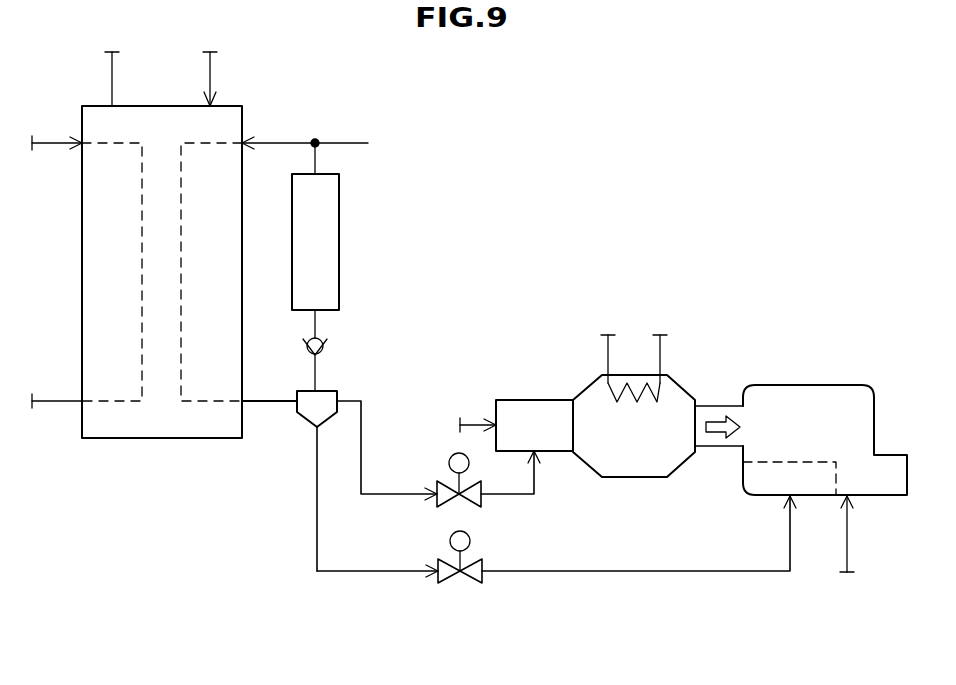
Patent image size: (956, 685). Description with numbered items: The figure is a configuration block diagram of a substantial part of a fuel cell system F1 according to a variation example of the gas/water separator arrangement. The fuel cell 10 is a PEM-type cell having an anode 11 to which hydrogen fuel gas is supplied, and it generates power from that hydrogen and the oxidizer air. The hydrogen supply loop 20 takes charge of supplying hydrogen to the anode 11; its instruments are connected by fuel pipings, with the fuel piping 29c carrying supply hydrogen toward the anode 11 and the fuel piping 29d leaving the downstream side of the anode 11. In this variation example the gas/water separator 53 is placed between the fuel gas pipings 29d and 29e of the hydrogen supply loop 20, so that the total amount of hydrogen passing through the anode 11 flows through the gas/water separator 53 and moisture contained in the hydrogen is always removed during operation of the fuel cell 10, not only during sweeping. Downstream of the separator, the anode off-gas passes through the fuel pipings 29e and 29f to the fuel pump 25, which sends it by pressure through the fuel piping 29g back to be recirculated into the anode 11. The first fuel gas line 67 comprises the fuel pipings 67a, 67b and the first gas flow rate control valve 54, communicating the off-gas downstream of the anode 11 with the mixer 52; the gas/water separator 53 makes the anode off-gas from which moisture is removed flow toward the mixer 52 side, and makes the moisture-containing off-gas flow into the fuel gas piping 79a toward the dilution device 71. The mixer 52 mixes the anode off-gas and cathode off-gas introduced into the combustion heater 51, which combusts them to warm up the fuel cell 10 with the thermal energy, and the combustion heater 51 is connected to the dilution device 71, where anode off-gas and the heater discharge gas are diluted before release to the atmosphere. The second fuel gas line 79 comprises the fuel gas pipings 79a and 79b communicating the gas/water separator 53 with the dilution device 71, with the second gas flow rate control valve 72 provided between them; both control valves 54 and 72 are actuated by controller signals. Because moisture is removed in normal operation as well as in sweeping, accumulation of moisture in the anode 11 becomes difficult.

The fuel cell system F1 is at (525, 180).
The fuel cell 10 is at (242, 80).
The anode 11 is at (181, 213).
The hydrogen supply loop 20 is at (447, 252).
The fuel pump 25 is at (339, 213).
The fuel piping 29c is at (350, 142).
The fuel piping 29d is at (266, 400).
The fuel piping 29e is at (316, 378).
The fuel piping 29f is at (316, 325).
The pipe from fuel pump to junction 29g is at (316, 160).
The combustion heater 51 is at (684, 386).
The mixer 52 is at (535, 399).
The gas/water separator 53 is at (301, 428).
The first gas flow rate control valve 54 is at (447, 508).
The first fuel gas line 67 is at (400, 418).
The fuel piping 67a is at (361, 453).
The fuel piping 67b is at (534, 497).
The dilution device 71 is at (824, 385).
The second gas flow rate control valve 72 is at (462, 584).
The second fuel gas line 79 is at (535, 580).
The fuel gas piping 79a is at (358, 572).
The fuel gas piping 79b is at (660, 572).